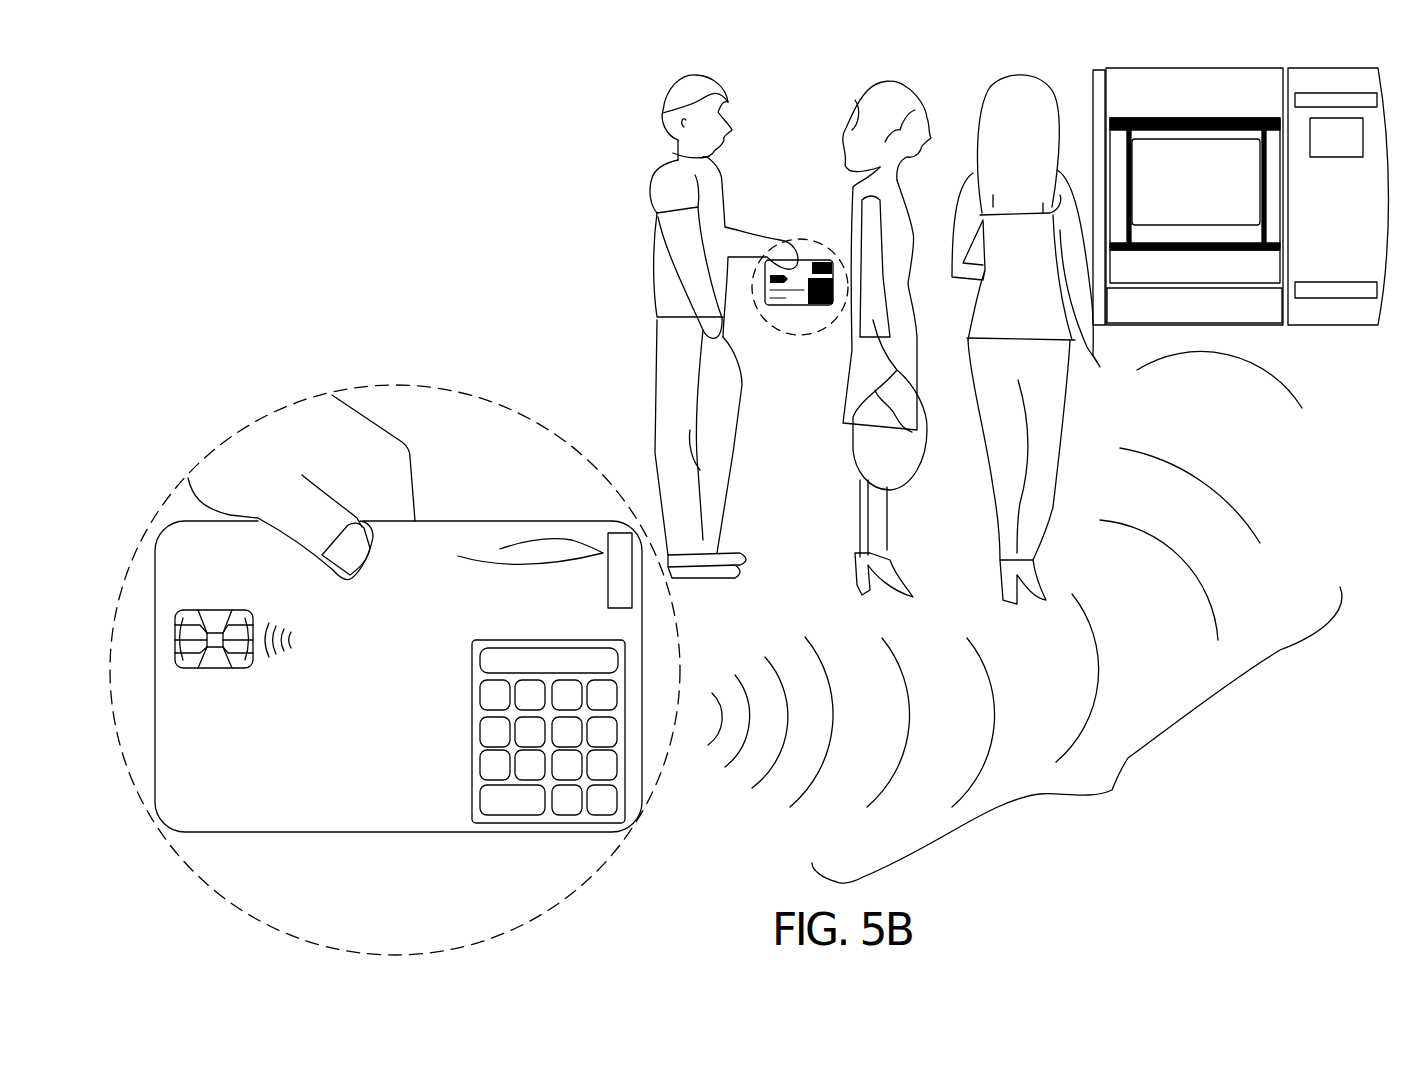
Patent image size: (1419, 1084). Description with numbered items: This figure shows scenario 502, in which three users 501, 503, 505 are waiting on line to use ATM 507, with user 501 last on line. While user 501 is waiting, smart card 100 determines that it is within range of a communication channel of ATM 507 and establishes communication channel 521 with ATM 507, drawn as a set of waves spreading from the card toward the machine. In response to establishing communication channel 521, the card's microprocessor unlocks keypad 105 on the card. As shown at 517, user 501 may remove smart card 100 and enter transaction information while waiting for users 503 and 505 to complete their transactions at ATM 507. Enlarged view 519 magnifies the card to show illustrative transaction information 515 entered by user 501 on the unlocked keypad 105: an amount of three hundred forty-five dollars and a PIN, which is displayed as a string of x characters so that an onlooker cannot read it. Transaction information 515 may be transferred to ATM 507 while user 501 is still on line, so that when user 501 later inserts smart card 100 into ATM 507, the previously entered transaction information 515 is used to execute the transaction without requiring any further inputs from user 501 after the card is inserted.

The scenario 502 is at (222, 72).
The user 501 is at (663, 93).
The user 503 is at (852, 108).
The user 505 is at (990, 92).
The ATM 507 is at (1340, 326).
The removal of smart card 517 is at (802, 237).
The enlarged view 519 is at (628, 848).
The smart card 100 is at (462, 519).
The transaction information 515 is at (557, 640).
The keypad 105 is at (470, 807).
The communication channel 521 is at (1112, 790).